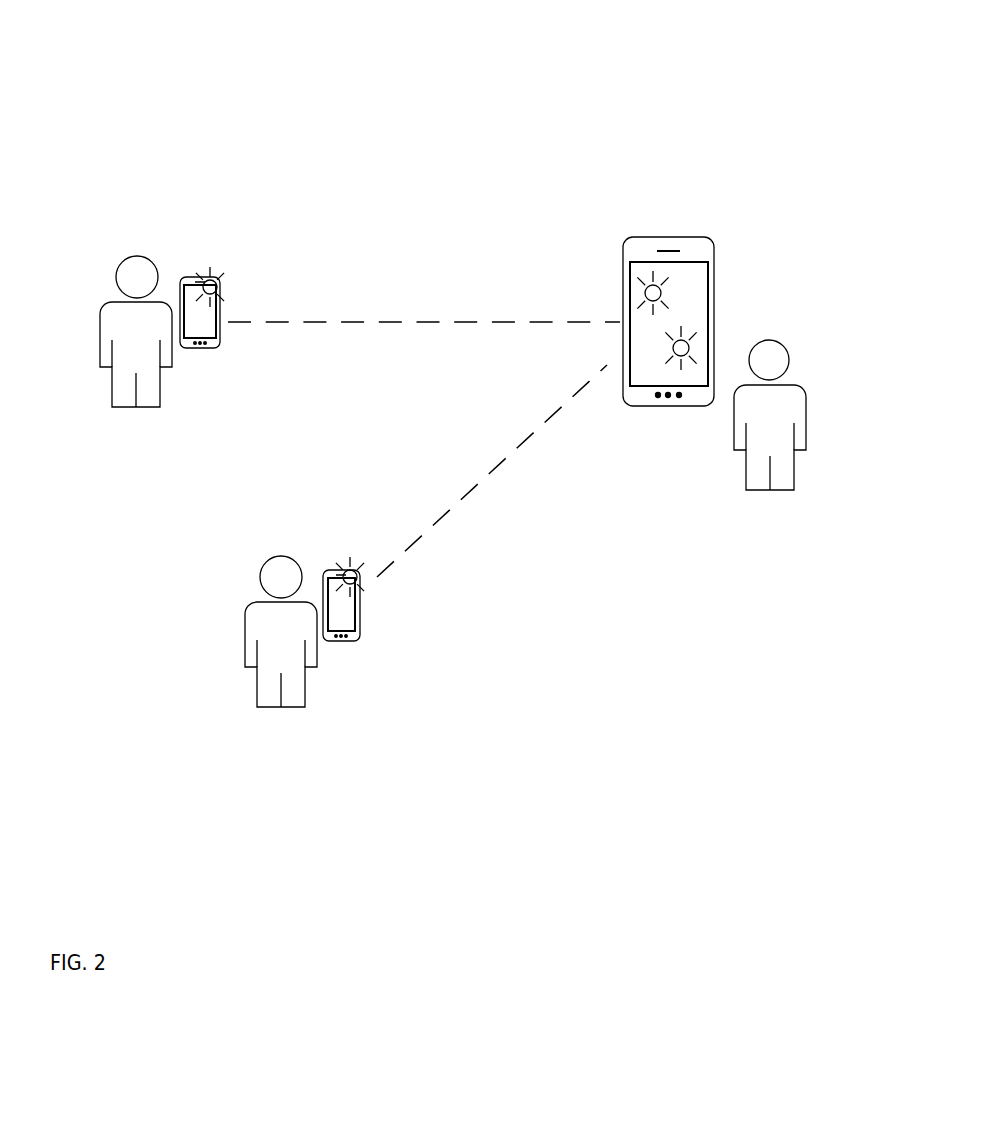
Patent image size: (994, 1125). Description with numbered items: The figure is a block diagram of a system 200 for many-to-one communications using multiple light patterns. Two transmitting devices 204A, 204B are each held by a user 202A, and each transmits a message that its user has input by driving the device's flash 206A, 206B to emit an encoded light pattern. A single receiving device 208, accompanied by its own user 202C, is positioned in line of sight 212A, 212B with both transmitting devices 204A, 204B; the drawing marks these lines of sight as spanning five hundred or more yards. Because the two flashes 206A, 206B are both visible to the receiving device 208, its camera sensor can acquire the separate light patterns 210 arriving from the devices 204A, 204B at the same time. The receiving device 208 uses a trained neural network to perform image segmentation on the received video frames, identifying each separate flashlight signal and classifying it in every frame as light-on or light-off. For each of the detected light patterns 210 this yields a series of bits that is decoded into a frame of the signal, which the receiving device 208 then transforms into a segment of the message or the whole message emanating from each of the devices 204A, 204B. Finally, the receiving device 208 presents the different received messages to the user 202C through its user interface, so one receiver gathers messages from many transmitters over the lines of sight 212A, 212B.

The system 200 is at (480, 137).
The user 202A is at (97, 288).
The user 202C is at (820, 372).
The device 204A is at (182, 263).
The device 204B is at (323, 565).
The flash 206A is at (244, 255).
The flash 206B is at (363, 582).
The device 208 is at (622, 227).
The light patterns 210 is at (683, 332).
The line of sight 212A is at (424, 321).
The line of sight 212B is at (507, 471).